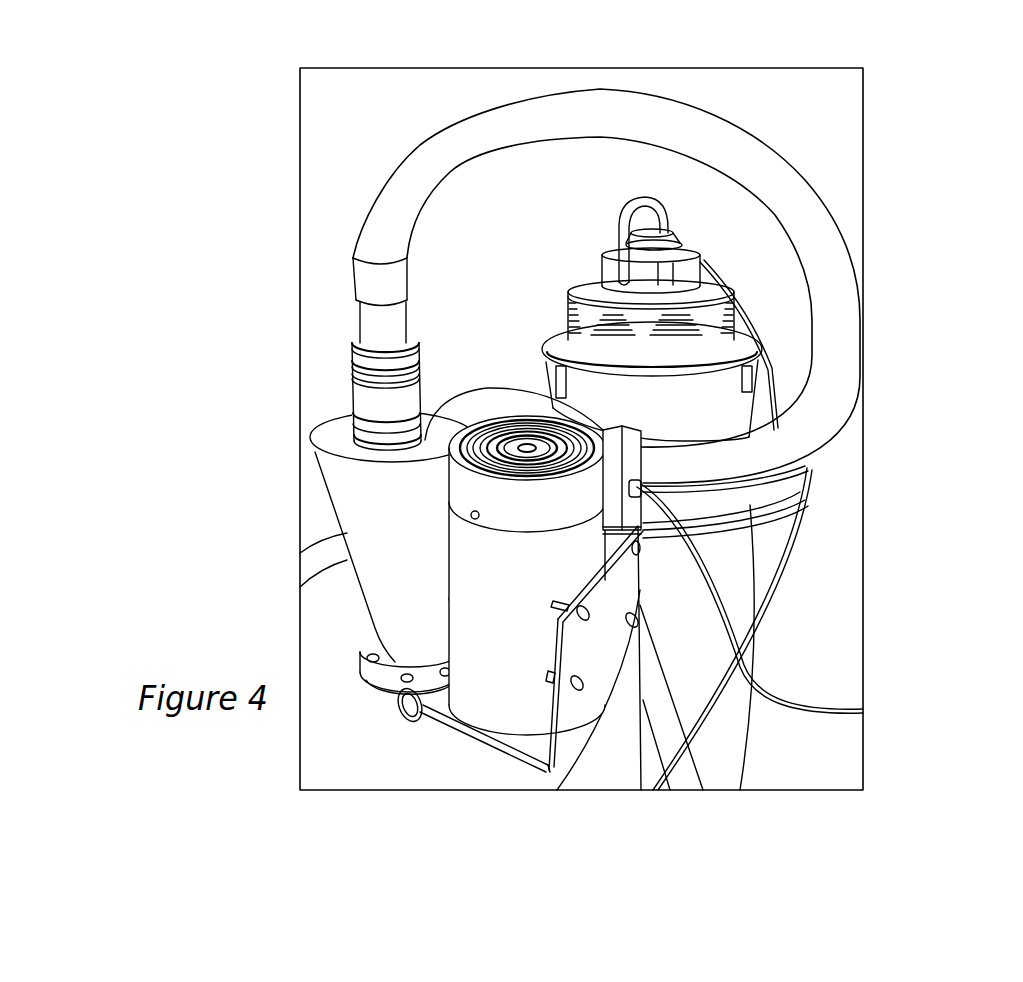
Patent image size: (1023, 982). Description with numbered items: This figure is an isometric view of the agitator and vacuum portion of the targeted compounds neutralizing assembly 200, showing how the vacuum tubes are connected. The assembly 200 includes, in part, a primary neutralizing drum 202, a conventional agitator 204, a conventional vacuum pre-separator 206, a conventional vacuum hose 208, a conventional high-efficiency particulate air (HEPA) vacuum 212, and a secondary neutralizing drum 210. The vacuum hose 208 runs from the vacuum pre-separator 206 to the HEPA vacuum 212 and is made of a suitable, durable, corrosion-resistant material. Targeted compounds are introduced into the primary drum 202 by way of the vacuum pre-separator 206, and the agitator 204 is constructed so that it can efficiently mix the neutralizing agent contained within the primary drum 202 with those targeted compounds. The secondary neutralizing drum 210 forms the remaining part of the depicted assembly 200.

The targeted compounds neutralizing assembly 200 is at (925, 115).
The primary neutralizing drum 202 is at (467, 760).
The conventional agitator 204 is at (535, 700).
The conventional vacuum pre-separator 206 is at (403, 623).
The conventional vacuum hose 208 is at (838, 325).
The secondary neutralizing drum 210 is at (741, 556).
The conventional high-efficiency particulate air (HEPA) vacuum 212 is at (710, 323).